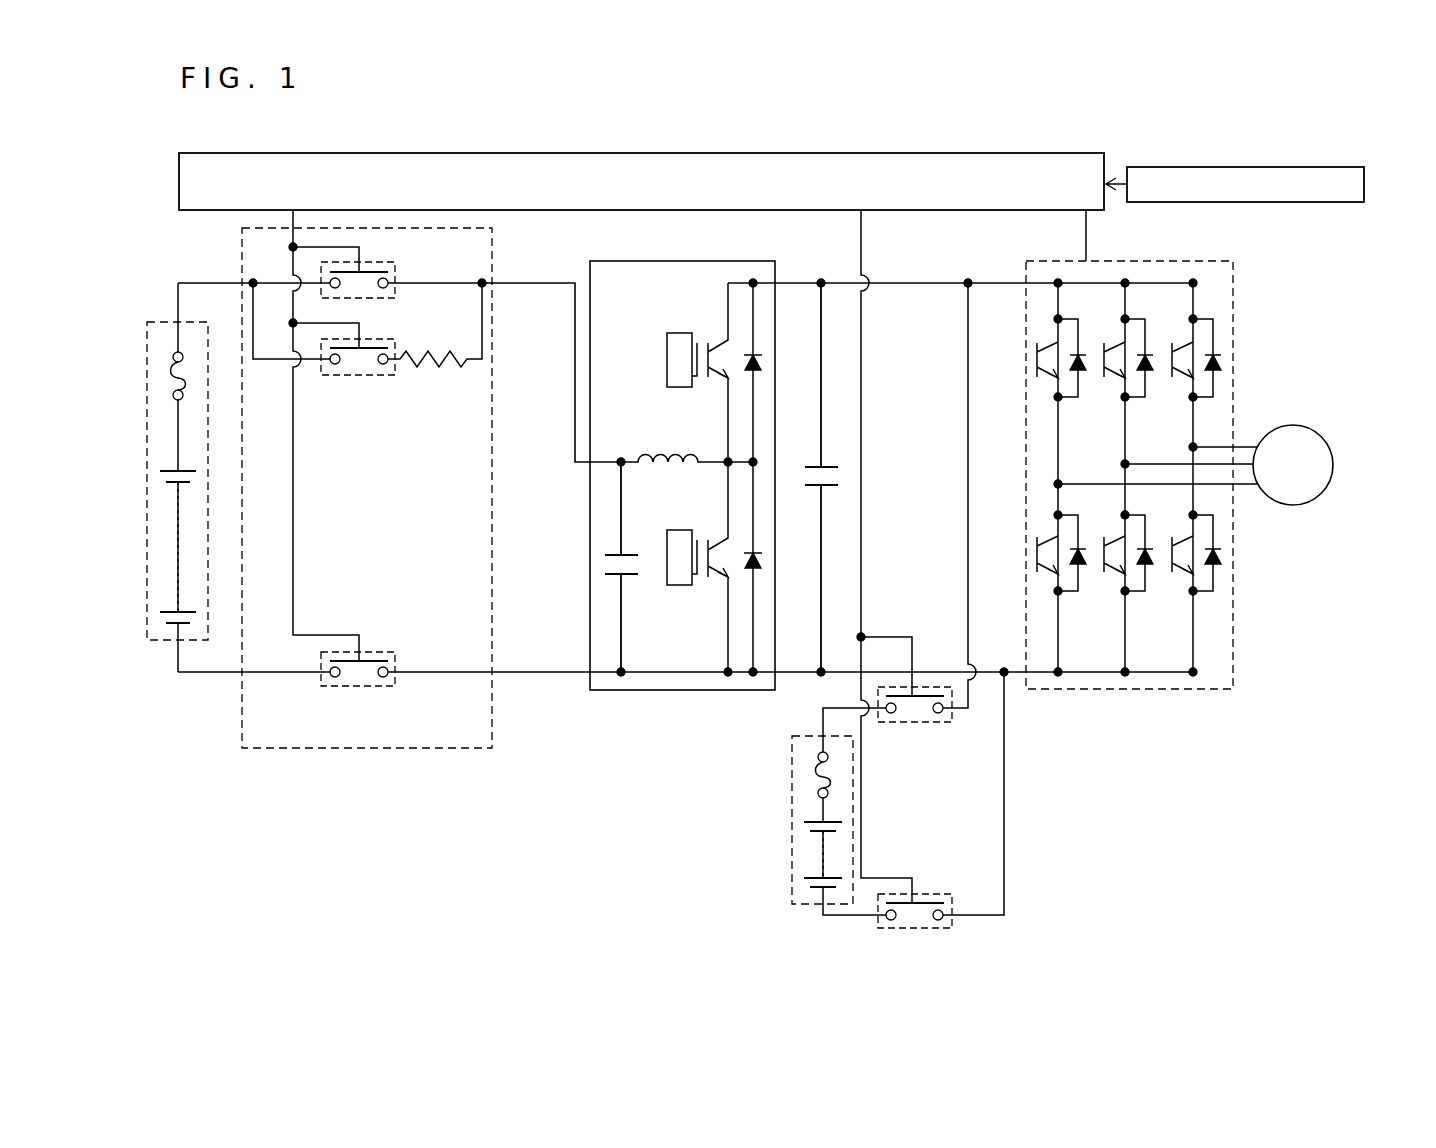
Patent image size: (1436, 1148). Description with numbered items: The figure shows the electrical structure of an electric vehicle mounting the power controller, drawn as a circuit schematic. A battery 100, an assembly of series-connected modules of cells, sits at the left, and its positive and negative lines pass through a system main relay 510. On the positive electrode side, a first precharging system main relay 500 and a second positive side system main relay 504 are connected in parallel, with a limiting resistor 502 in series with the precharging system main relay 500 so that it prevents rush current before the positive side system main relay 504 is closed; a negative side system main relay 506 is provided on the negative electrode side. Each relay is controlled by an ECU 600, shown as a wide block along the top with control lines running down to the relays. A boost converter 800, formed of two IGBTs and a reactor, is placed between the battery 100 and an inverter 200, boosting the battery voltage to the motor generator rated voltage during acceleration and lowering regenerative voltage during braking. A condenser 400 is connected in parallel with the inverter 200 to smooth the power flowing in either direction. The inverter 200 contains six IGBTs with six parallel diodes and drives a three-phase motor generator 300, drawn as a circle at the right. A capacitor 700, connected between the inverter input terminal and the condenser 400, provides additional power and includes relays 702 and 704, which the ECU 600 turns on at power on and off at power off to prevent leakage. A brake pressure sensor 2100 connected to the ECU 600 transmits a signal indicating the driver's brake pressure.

The battery 100 is at (167, 322).
The inverter 200 is at (1195, 262).
The motor generator 300 is at (1290, 425).
The condenser 400 is at (813, 505).
The SMR (1) 500 is at (359, 377).
The limiting resistor 502 is at (416, 392).
The SMR (2) 504 is at (396, 271).
The SMR (3) 506 is at (359, 688).
The system main relay 510 is at (242, 719).
The ECU 600 is at (813, 153).
The capacitor 700 is at (792, 770).
The relay 702 is at (938, 723).
The relay 704 is at (938, 893).
The boost converter 800 is at (715, 260).
The brake pressure sensor 2100 is at (1364, 185).